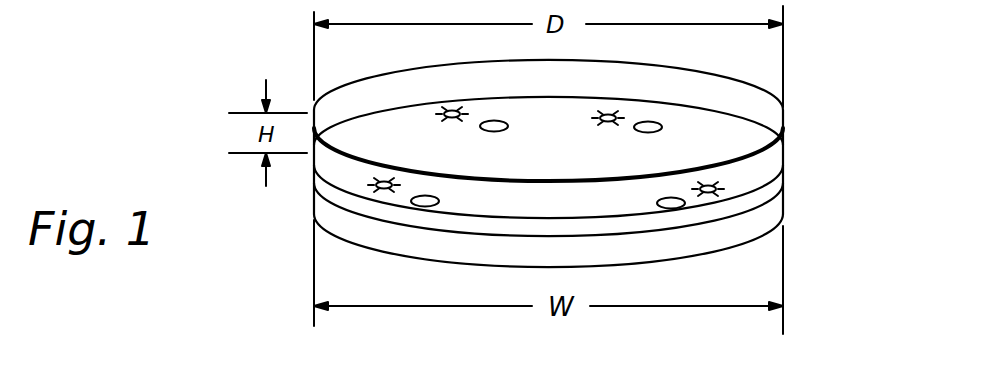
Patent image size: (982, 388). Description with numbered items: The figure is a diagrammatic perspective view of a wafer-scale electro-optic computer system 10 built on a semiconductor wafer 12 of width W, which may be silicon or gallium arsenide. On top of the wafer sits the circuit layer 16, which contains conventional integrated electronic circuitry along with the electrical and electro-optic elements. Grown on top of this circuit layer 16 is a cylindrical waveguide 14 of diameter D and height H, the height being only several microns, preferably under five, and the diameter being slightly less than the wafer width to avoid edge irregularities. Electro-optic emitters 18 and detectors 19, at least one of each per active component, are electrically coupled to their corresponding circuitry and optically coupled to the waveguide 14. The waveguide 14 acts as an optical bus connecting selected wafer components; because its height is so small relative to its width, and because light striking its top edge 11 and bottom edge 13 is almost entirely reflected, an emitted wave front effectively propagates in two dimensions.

The wafer-scale electro-optic computer system 10 is at (789, 105).
The top edge 11 is at (748, 84).
The semiconductor wafer 12 is at (787, 196).
The bottom edge 13 is at (682, 106).
The cylindrical waveguide 14 is at (786, 139).
The circuit layer 16 is at (738, 214).
The electro-optic emitters 18 is at (440, 114).
The detectors 19 is at (491, 121).